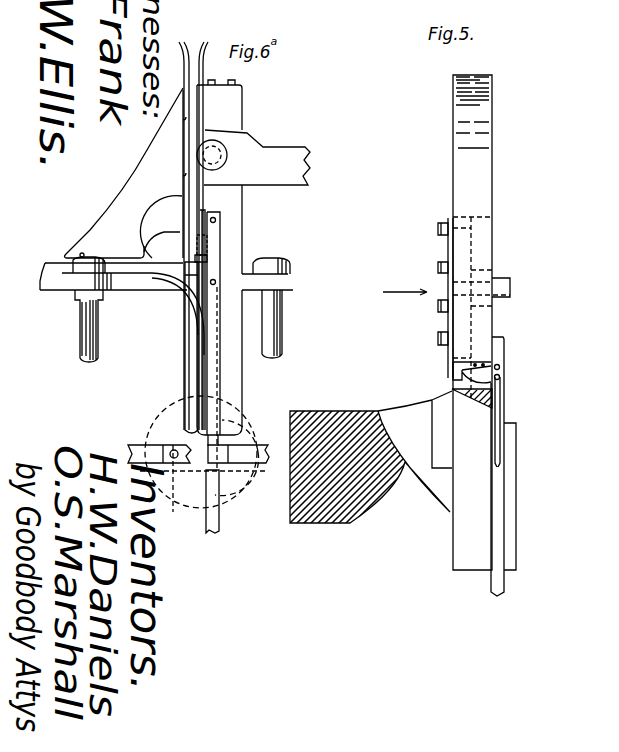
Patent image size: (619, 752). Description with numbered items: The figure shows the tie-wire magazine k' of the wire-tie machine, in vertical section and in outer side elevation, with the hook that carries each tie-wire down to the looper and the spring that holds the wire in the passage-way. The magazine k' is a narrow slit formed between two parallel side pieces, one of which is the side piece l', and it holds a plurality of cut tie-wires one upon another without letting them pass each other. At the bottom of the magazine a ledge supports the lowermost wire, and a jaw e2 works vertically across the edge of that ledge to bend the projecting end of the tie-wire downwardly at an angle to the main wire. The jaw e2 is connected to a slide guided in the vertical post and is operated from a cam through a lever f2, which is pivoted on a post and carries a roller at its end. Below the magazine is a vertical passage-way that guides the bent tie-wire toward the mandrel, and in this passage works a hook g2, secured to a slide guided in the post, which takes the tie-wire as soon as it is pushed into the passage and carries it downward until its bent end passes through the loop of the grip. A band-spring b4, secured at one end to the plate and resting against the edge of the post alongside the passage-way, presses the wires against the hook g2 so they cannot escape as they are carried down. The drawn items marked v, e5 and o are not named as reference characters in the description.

In FIG. 5, the magazine k' is at (489, 322).
In FIG. 5, the side piece l' is at (475, 260).
In FIG. 6A, the lever f2 is at (298, 158).
In FIG. 6A, the curved guide v is at (147, 243).
In FIG. 6A, the hook g2 is at (205, 245).
In FIG. 5, the hook g2 is at (481, 378).
In FIG. 6A, the band-spring b4 is at (197, 300).
In FIG. 5, the lug e5 is at (493, 274).
In FIG. 5, the direction arrow o is at (405, 283).
In FIG. 5, the jaw e2 is at (454, 364).